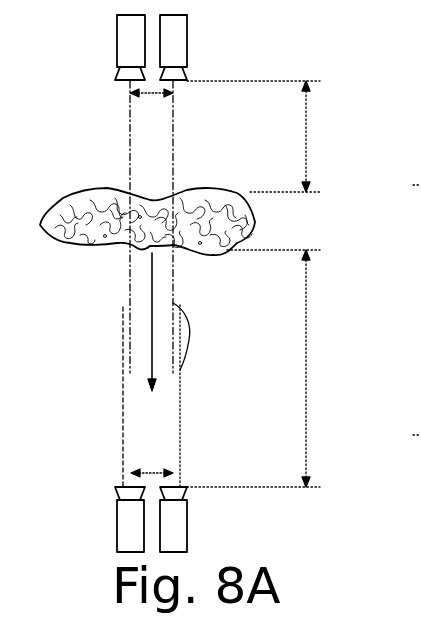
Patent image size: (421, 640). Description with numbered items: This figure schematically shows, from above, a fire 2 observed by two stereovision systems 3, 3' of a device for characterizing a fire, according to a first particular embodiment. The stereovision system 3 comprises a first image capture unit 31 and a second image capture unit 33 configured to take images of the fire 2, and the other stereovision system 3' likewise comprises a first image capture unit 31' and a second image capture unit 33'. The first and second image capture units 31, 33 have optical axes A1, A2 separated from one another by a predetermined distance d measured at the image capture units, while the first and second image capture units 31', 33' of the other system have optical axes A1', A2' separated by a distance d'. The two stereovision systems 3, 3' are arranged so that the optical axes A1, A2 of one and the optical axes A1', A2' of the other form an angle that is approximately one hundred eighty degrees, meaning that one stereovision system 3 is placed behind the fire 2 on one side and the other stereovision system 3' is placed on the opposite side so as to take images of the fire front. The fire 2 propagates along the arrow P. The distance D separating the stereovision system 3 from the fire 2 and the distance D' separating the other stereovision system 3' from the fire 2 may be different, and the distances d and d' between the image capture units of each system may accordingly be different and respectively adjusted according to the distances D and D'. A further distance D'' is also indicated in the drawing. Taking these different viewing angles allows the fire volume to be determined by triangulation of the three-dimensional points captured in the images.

The fire 2 is at (56, 210).
The stereovision system 3 is at (71, 69).
The stereovision system 3' is at (76, 552).
The first image capture unit 31 is at (103, 46).
The second image capture unit 33 is at (204, 47).
The first image capture unit 31' is at (103, 519).
The second image capture unit 33' is at (205, 519).
The first optical axis A1 is at (97, 227).
The second optical axis A2 is at (206, 227).
The first optical axis A1' is at (89, 397).
The second optical axis A2' is at (215, 396).
The predetermined distance d is at (151, 118).
The distance d' is at (152, 452).
The distance D is at (275, 136).
The distance D' is at (277, 368).
The distance D'' is at (412, 310).
The arrow P is at (148, 388).